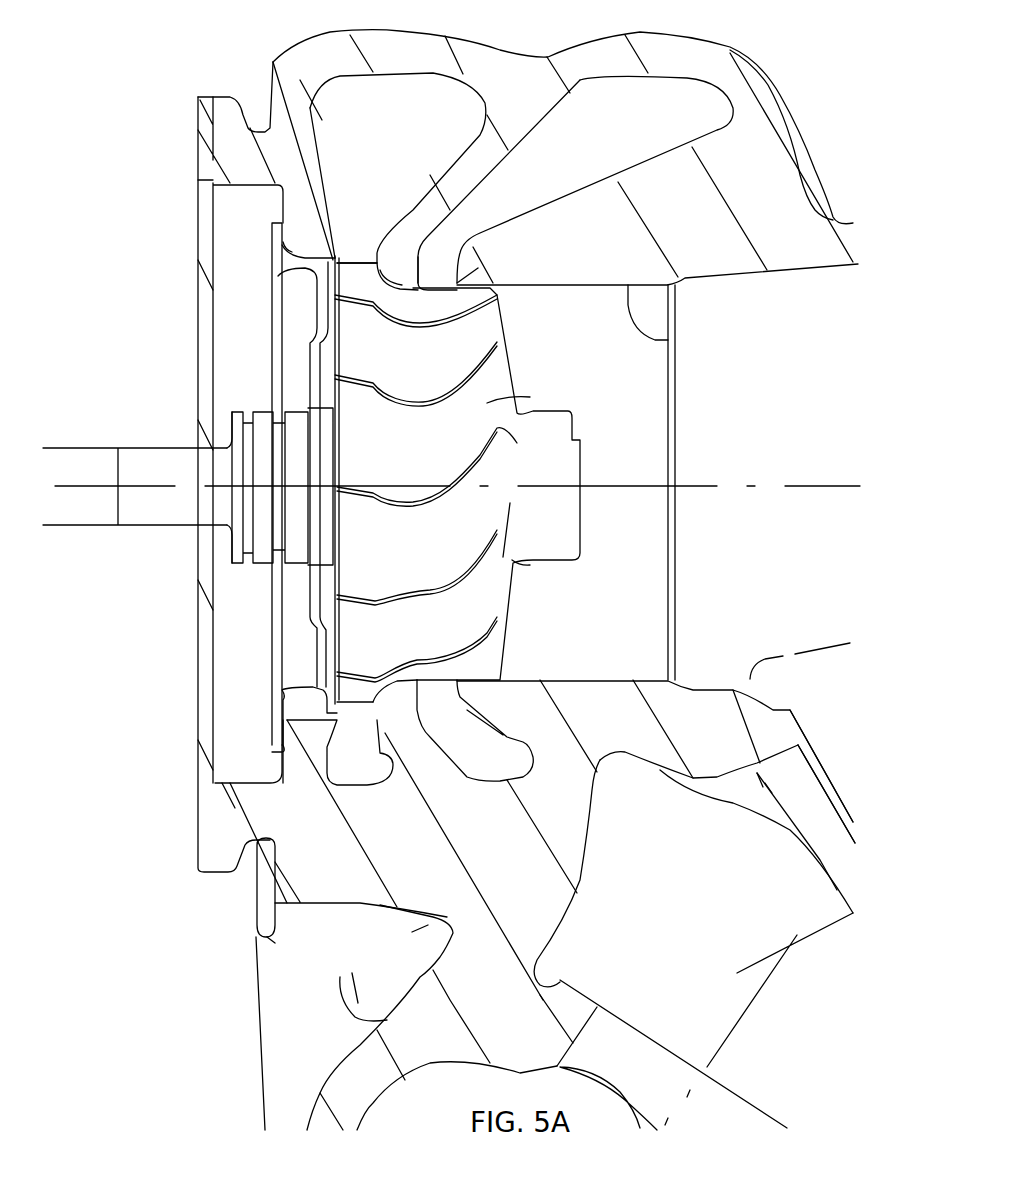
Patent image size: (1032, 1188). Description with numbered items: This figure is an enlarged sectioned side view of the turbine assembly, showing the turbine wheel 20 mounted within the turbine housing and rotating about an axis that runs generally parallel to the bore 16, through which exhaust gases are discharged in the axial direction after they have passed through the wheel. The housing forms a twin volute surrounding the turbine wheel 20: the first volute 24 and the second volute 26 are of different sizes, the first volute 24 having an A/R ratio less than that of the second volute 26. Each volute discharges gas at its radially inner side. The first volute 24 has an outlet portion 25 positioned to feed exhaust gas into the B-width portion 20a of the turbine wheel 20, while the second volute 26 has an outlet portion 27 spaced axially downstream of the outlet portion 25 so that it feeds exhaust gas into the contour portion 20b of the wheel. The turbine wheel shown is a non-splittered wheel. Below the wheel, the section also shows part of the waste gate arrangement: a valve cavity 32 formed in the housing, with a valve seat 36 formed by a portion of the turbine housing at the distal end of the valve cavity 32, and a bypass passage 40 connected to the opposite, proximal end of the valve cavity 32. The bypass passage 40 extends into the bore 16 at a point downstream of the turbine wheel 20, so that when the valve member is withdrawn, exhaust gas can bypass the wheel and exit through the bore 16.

The bore 16 is at (668, 340).
The turbine wheel 20 is at (492, 396).
The B-width portion 20a is at (363, 255).
The contour portion 20b is at (430, 282).
The first volute 24 is at (392, 131).
The outlet portion 25 is at (348, 260).
The second volute 26 is at (630, 146).
The outlet portion 27 is at (445, 283).
The valve cavity 32 is at (613, 845).
The valve seat 36 is at (580, 997).
The bypass passage 40 is at (790, 777).